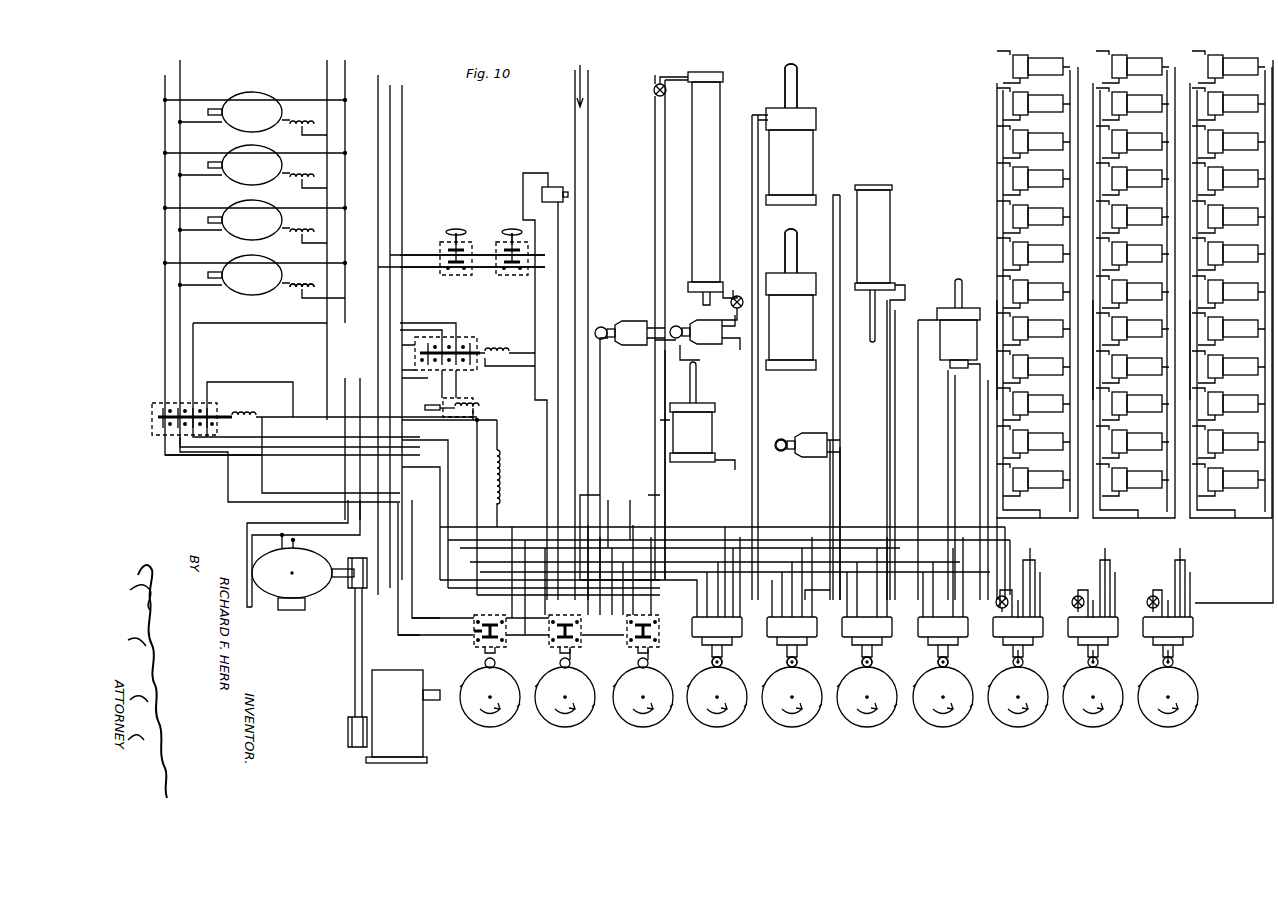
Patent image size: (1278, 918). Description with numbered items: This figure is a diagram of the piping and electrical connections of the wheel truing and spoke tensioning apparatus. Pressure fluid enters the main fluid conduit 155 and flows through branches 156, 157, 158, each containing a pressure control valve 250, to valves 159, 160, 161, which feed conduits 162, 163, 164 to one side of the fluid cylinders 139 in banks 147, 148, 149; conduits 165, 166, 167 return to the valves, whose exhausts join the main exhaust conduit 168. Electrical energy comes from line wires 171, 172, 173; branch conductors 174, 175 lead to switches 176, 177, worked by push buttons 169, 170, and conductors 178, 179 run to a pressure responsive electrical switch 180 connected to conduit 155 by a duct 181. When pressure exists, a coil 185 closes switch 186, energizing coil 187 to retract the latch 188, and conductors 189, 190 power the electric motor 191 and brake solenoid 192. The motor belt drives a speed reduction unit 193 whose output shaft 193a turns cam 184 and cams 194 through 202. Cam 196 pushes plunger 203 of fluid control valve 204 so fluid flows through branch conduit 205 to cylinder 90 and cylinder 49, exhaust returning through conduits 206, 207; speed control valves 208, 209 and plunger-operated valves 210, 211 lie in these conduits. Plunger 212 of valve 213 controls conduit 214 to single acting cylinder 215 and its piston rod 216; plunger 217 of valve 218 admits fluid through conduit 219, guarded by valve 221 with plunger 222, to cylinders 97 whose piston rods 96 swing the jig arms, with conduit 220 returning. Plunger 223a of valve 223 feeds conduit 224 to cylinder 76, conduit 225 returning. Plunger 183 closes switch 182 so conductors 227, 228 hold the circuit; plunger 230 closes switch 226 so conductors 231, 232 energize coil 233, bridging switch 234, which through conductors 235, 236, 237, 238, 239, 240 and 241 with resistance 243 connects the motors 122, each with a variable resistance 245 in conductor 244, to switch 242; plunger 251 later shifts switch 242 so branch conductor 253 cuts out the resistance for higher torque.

The cylinder 49 is at (697, 416).
The fluid cylinder 76 is at (947, 312).
The fluid cylinder 90 is at (700, 185).
The piston rod 96 is at (800, 90).
The fluid cylinder 97 is at (800, 160).
The motor 122 is at (255, 195).
The fluid cylinder 139 is at (1000, 63).
The bank 147 is at (1107, 284).
The bank 148 is at (1126, 277).
The bank 149 is at (1232, 275).
The main fluid conduit 155 is at (590, 150).
The branch conduit 156 is at (996, 600).
The branch conduit 157 is at (1072, 600).
The branch conduit 158 is at (1150, 596).
The valve 159 is at (1018, 607).
The valve 160 is at (1093, 607).
The valve 161 is at (1208, 363).
The conduit 162 is at (996, 205).
The conduit 163 is at (1095, 90).
The conduit 164 is at (1192, 90).
The conduit 165 is at (1068, 86).
The conduit 166 is at (1167, 86).
The conduit 167 is at (1263, 86).
The main exhaust conduit 168 is at (660, 528).
The push button 169 is at (456, 225).
The push button 170 is at (511, 225).
The line wire 171 is at (376, 110).
The line wire 172 is at (388, 100).
The line wire 173 is at (404, 112).
The branch conductor 174 is at (414, 272).
The branch conductor 175 is at (430, 262).
The switch 176 is at (440, 244).
The switch 177 is at (497, 244).
The conductor 178 is at (523, 180).
The conductor 179 is at (540, 190).
The pressure responsive electrical switch 180 is at (553, 186).
The duct 181 is at (568, 193).
The electrical switch 182 is at (556, 650).
The plunger 183 is at (572, 656).
The cam 184 is at (555, 712).
The coil 185 is at (500, 350).
The switch 186 is at (476, 338).
The coil 187 is at (470, 405).
The latch 188 is at (427, 408).
The conductor 189 is at (330, 522).
The conductor 190 is at (360, 522).
The electric motor 191 is at (310, 596).
The solenoid 192 is at (245, 605).
The speed reduction unit 193 is at (395, 748).
The output shaft 193a is at (435, 702).
The cam 194 is at (484, 712).
The cam 195 is at (630, 712).
The cam 196 is at (708, 712).
The cam 197 is at (783, 712).
The cam 198 is at (858, 712).
The cam 199 is at (933, 712).
The cam 200 is at (1013, 712).
The cam 201 is at (1083, 712).
The cam 202 is at (1158, 712).
The plunger 203 is at (722, 653).
The fluid control valve 204 is at (717, 642).
The branch conduit 205 is at (664, 218).
The branch conduit 206 is at (736, 598).
The branch conduit 207 is at (700, 578).
The speed control valve 208 is at (656, 88).
The speed control valve 209 is at (740, 296).
The plunger-operated valve 210 is at (645, 322).
The plunger-operated valve 211 is at (700, 322).
The plunger 212 is at (872, 652).
The valve 213 is at (867, 602).
The branch conduit 214 is at (889, 508).
The single acting cylinder 215 is at (878, 240).
The piston rod 216 is at (868, 338).
The plunger 217 is at (797, 652).
The valve 218 is at (798, 602).
The branch conduit 219 is at (842, 477).
The branch conduit 220 is at (752, 122).
The plunger-operated valve 221 is at (823, 432).
The plunger 222 is at (780, 452).
The valve 223 is at (964, 597).
The plunger 223a is at (938, 660).
The branch conduit 224 is at (948, 450).
The branch conduit 225 is at (986, 500).
The electrical switch 226 is at (472, 640).
The branch conductor 227 is at (440, 452).
The branch conductor 228 is at (475, 423).
The plunger 230 is at (484, 652).
The branch conductor 231 is at (412, 588).
The branch conductor 232 is at (410, 618).
The coil 233 is at (240, 413).
The switch 234 is at (150, 415).
The branch conductor 235 is at (196, 462).
The branch conductor 236 is at (163, 462).
The branch conductor 237 is at (163, 318).
The branch conductor 238 is at (182, 322).
The branch conductor 239 is at (290, 323).
The conductor 240 is at (290, 445).
The branch conductor 241 is at (220, 386).
The switch 242 is at (626, 614).
The resistance 243 is at (500, 485).
The branch conductor 244 is at (328, 370).
The variable resistance 245 is at (296, 294).
The pressure control valve 250 is at (1000, 612).
The plunger 251 is at (650, 657).
The branch conductor 253 is at (490, 588).